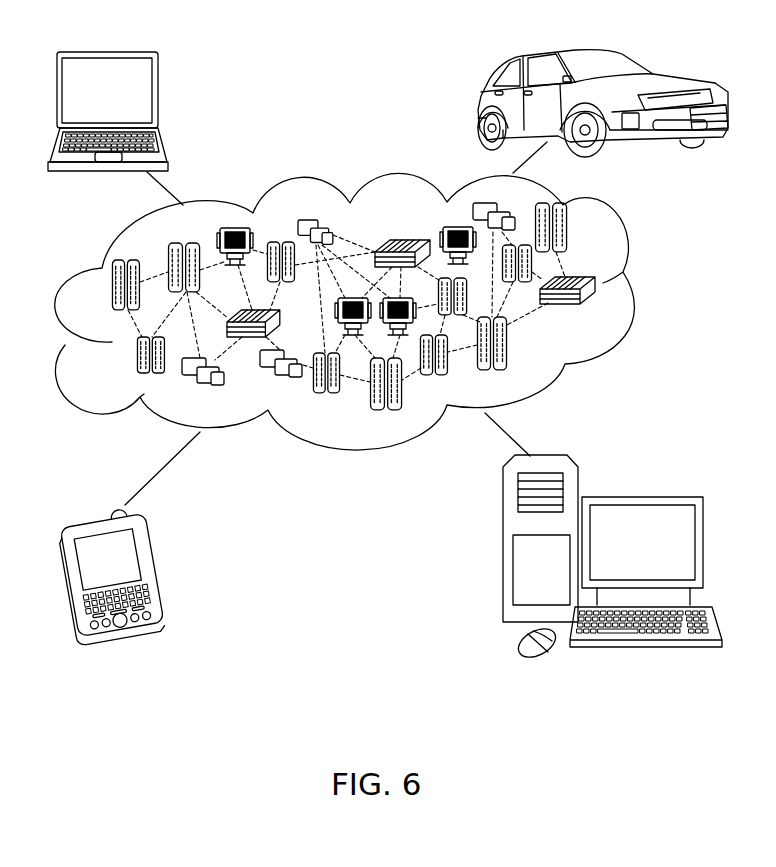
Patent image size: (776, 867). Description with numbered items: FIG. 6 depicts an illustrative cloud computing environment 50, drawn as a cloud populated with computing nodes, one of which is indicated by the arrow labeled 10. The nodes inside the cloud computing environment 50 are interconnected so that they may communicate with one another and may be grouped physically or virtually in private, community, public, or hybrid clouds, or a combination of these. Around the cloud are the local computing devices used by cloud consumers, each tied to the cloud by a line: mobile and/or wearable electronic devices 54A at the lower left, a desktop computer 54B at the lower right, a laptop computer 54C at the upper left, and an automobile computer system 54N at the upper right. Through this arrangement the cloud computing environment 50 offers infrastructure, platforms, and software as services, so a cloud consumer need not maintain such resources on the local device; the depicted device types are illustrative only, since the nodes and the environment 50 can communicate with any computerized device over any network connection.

The cloud computing node 10 is at (597, 309).
The cloud computing environment 50 is at (638, 289).
The mobile and/or wearable electronic devices 54A is at (157, 568).
The desktop computer 54B is at (641, 496).
The laptop computer 54C is at (161, 96).
The automobile computer system 54N is at (478, 104).